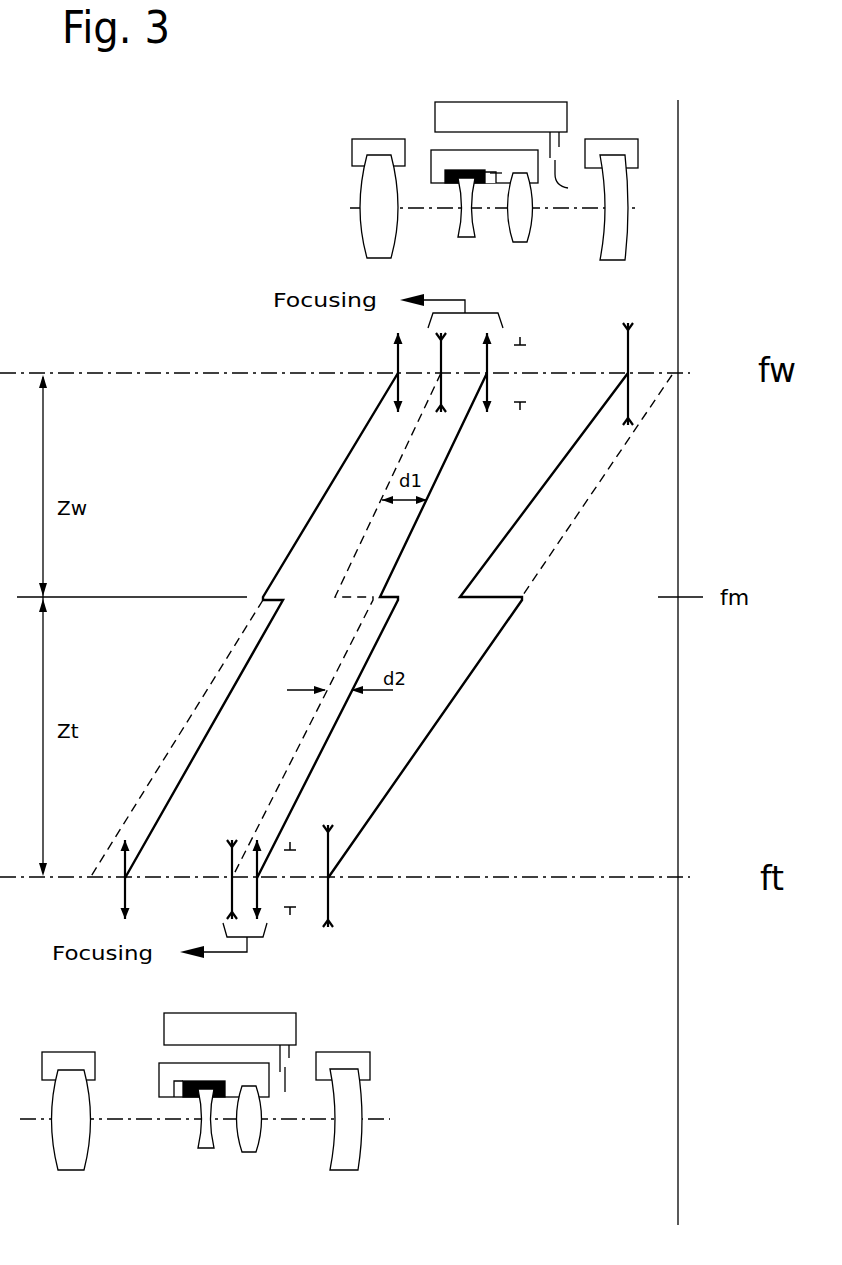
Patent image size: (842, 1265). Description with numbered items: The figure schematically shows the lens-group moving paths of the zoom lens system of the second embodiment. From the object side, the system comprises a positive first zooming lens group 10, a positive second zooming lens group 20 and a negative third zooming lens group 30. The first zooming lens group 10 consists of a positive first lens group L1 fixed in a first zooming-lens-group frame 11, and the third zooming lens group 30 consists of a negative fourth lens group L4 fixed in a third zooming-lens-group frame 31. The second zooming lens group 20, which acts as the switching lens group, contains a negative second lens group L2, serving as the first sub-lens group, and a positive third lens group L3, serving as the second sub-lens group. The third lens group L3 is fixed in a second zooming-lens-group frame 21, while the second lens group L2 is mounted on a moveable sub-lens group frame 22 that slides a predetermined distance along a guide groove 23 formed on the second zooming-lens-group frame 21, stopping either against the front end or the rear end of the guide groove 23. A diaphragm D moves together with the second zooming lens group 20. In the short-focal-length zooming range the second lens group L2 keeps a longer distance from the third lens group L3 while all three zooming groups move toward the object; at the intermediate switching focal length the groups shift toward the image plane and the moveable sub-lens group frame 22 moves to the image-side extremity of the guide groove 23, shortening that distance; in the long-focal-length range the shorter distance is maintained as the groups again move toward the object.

The first zooming lens group 10 is at (357, 165).
The first zooming-lens-group frame 11 is at (362, 144).
The second zooming lens group 20 is at (496, 186).
The second zooming-lens-group frame 21 is at (494, 158).
The moveable sub-lens group frame 22 is at (449, 188).
The guide groove 23 is at (490, 176).
The third zooming lens group 30 is at (630, 188).
The third zooming-lens-group frame 31 is at (633, 150).
The first lens group L1 is at (378, 235).
The second lens group L2 is at (467, 238).
The third lens group L3 is at (522, 242).
The fourth lens group L4 is at (622, 247).
The diaphragm D is at (571, 181).